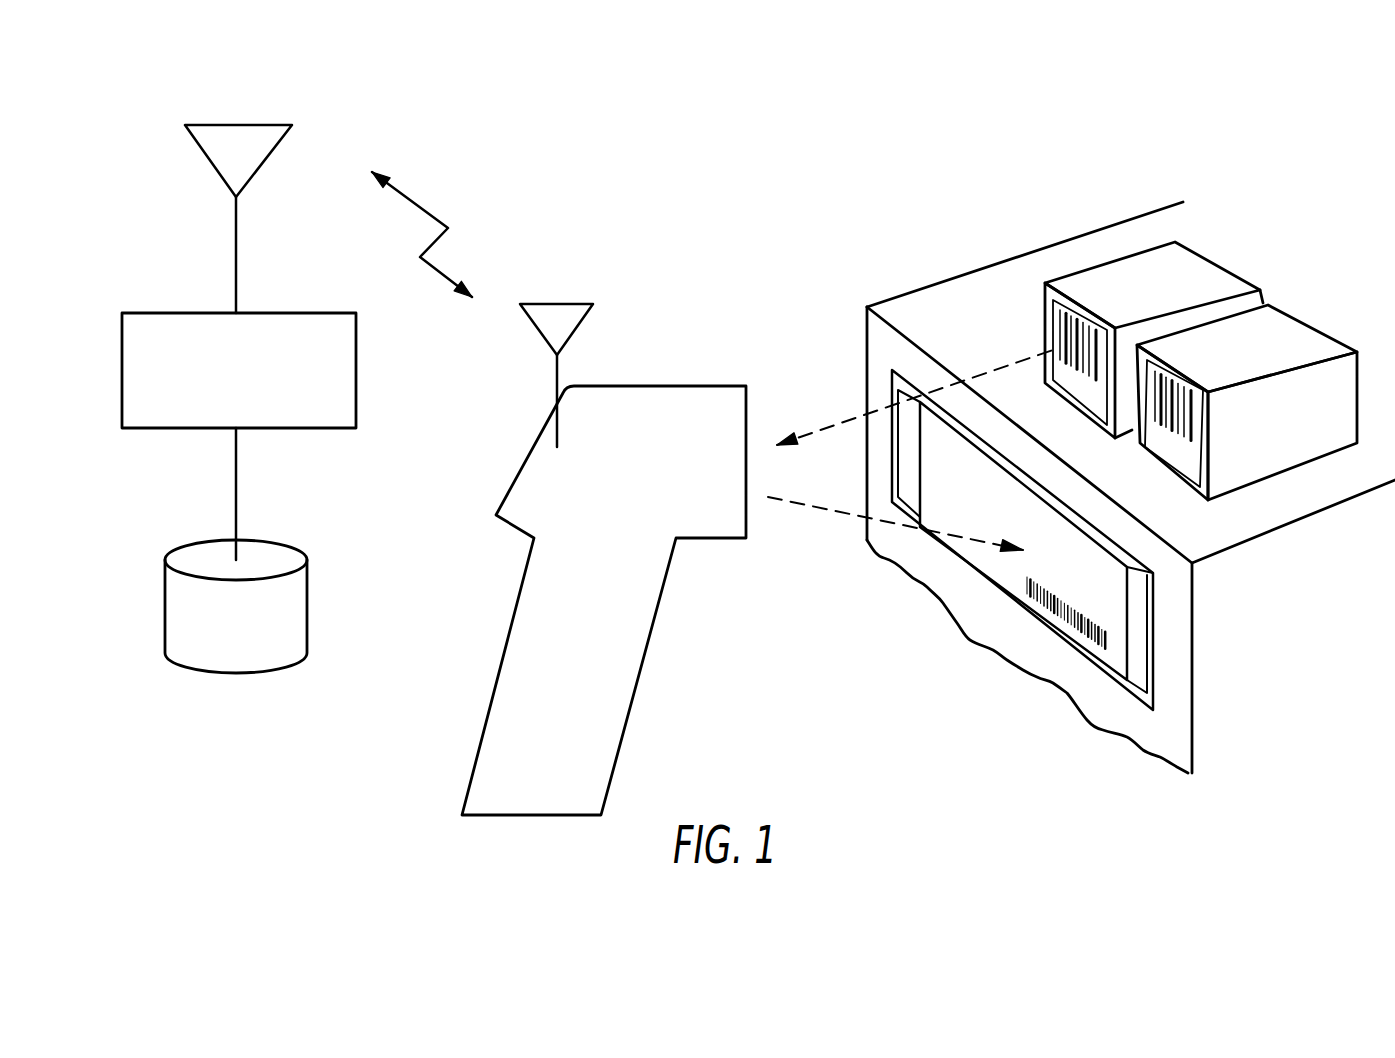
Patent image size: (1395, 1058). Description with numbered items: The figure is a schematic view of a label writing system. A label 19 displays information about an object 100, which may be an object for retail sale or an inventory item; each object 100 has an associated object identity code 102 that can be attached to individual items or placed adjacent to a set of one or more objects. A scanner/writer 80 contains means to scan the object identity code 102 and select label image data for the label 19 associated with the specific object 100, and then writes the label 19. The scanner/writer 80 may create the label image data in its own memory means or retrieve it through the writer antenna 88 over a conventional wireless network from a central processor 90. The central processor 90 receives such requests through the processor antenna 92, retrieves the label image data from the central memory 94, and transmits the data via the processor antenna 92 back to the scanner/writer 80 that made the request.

The label 19 is at (1012, 626).
The scanner/writer 80 is at (598, 662).
The writer antenna 88 is at (573, 304).
The central processor 90 is at (180, 313).
The processor antenna 92 is at (222, 124).
The central memory 94 is at (273, 540).
The object 100 is at (1117, 282).
The object identity code 102 is at (1063, 333).